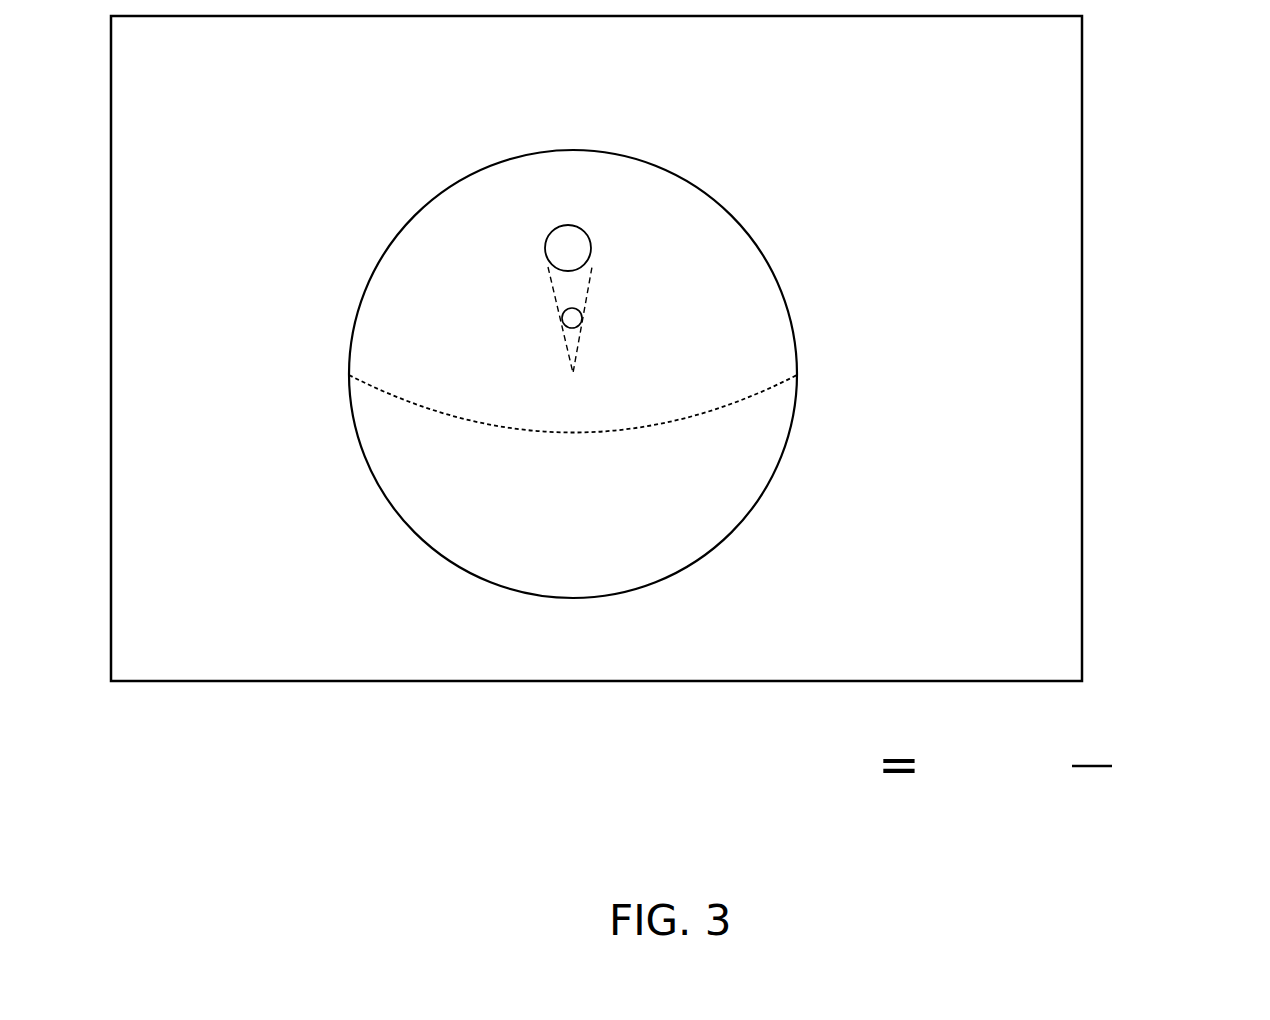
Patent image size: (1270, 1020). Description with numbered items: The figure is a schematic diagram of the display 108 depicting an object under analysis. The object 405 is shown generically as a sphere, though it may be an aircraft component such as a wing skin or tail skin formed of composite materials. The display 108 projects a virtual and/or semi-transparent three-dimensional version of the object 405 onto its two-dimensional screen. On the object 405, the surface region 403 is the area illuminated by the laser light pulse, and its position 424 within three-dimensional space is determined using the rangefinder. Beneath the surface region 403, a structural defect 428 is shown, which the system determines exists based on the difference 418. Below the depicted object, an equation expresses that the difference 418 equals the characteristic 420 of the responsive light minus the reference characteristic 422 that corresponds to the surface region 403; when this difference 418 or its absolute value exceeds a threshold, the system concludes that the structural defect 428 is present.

The display 108 is at (183, 661).
The surface region 403 is at (536, 246).
The object 405 is at (722, 206).
The position 424 is at (591, 253).
The structural defect 428 is at (580, 323).
The difference 418 is at (803, 808).
The characteristic 420 is at (978, 808).
The reference characteristic 422 is at (1162, 808).